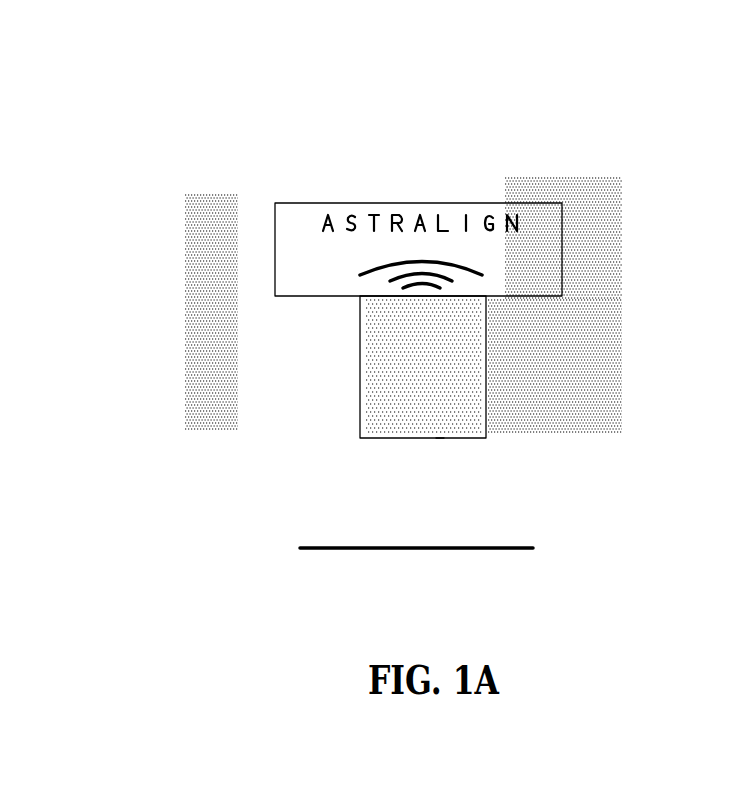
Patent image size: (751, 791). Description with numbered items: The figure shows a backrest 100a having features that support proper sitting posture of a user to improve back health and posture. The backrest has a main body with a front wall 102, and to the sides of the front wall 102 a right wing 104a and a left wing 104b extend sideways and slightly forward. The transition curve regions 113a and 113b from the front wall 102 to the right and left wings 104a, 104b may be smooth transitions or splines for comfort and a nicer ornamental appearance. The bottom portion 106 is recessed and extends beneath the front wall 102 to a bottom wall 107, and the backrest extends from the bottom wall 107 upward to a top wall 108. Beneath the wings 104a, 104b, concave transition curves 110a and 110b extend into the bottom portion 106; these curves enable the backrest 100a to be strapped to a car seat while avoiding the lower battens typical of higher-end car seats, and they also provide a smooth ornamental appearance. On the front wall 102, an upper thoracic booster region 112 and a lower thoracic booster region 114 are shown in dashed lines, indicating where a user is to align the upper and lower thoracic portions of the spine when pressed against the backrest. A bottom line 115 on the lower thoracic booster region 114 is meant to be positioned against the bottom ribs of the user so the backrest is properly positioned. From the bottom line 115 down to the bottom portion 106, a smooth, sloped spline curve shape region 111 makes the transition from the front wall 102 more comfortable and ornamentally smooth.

The backrest 100a is at (429, 335).
The front wall 102 is at (305, 395).
The right wing 104a is at (203, 183).
The left wing 104b is at (635, 190).
The bottom portion 106 is at (590, 501).
The bottom wall 107 is at (375, 550).
The top wall 108 is at (477, 112).
The transition curve 110a is at (225, 450).
The transition curve 110b is at (653, 458).
The spline curve shape region 111 is at (315, 464).
The upper thoracic booster region 112 is at (558, 320).
The transition curve region 113a is at (248, 215).
The transition curve region 113b is at (573, 215).
The lower thoracic booster region 114 is at (522, 380).
The bottom line 115 is at (480, 480).